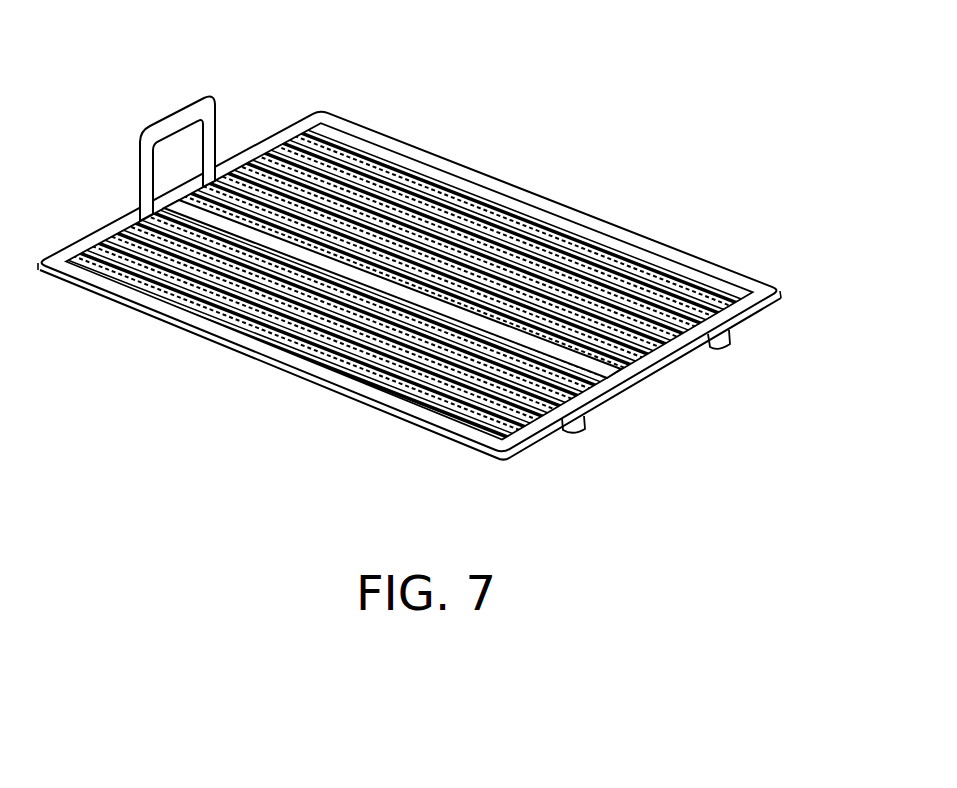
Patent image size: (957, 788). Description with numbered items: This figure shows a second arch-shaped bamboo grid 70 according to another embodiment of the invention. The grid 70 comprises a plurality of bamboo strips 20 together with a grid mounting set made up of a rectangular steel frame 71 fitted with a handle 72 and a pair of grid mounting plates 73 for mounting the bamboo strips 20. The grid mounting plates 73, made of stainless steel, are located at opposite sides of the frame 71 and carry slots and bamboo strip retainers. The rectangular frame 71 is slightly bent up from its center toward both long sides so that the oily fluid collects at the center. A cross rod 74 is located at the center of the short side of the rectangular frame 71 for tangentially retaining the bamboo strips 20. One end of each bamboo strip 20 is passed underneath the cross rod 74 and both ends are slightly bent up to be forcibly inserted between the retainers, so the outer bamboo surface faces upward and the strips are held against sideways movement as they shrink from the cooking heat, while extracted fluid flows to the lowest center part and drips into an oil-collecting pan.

The bamboo strips 20 is at (481, 187).
The second arch-shaped bamboo grid 70 is at (428, 291).
The rectangular steel frame 71 is at (300, 368).
The handle 72 is at (173, 124).
The grid mounting plates 73 is at (733, 334).
The cross rod 74 is at (640, 384).